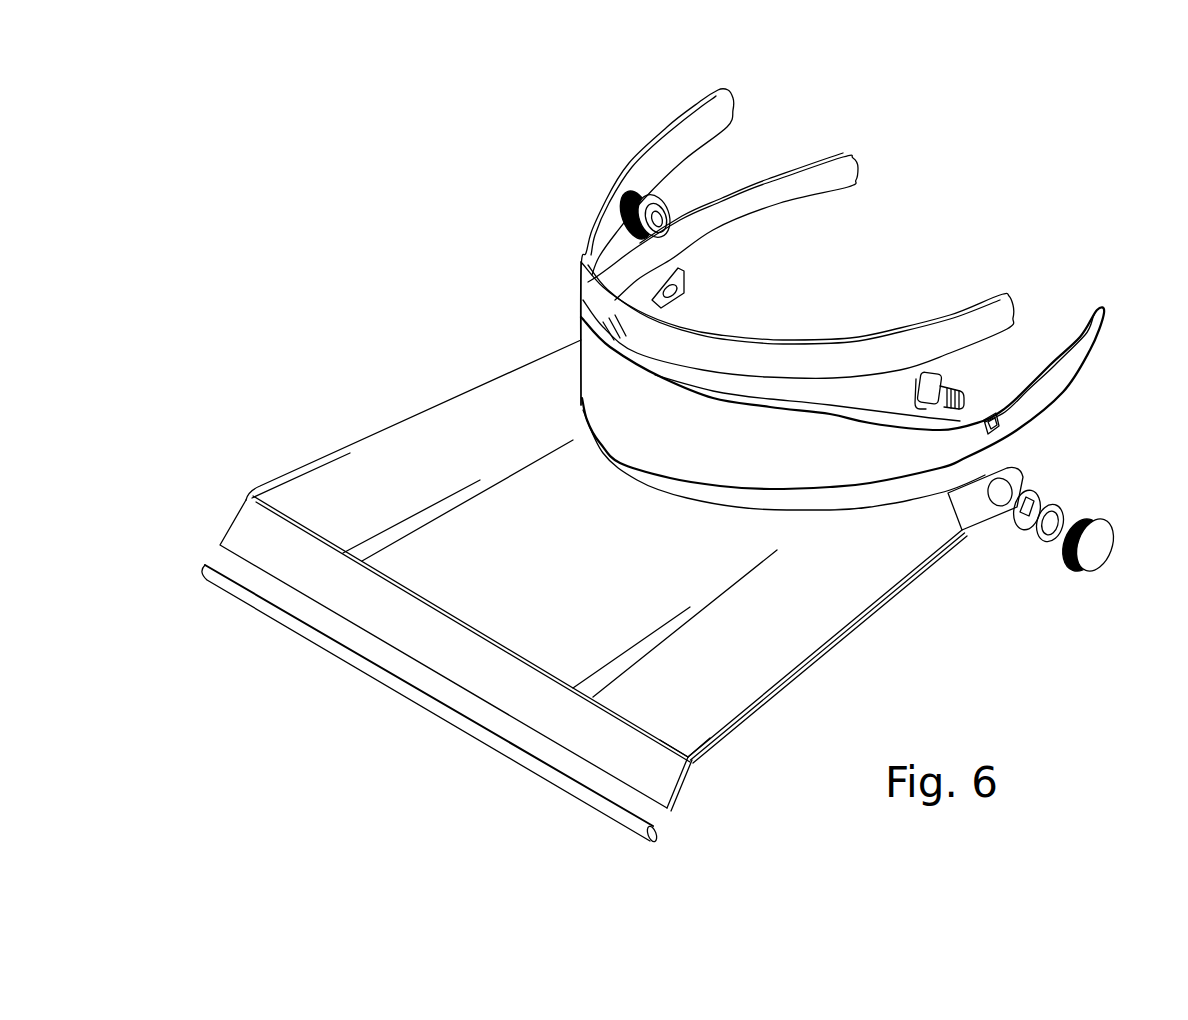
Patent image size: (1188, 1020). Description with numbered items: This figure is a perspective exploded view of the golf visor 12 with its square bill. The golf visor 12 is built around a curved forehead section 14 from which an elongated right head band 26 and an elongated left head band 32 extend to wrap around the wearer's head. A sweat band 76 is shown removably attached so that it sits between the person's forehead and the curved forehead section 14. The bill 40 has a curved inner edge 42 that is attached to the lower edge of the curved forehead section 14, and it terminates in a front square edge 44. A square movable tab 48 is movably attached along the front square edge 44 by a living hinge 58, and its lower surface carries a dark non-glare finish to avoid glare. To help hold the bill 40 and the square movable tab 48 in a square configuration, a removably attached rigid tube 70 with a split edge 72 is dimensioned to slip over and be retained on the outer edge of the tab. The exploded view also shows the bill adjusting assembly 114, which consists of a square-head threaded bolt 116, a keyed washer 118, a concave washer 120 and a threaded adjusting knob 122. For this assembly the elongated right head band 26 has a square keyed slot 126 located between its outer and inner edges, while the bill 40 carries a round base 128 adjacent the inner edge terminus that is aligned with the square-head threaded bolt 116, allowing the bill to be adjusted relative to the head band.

The golf visor 12 is at (842, 324).
The curved forehead section 14 is at (711, 434).
The elongated right head band 26 is at (789, 187).
The elongated left head band 32 is at (1086, 346).
The bill 40 is at (391, 452).
The curved inner edge 42 is at (582, 424).
The front square edge 44 is at (323, 548).
The square movable tab 48 is at (658, 764).
The living hinge 58 is at (625, 725).
The rigid tube 70 is at (622, 816).
The split edge 72 is at (653, 836).
The sweat band 76 is at (708, 124).
The bill adjusting assembly 114 is at (1060, 580).
The square-head threaded bolt 116 is at (937, 374).
The keyed washer 118 is at (1030, 503).
The concave washer 120 is at (1053, 523).
The threaded adjusting knob 122 is at (1111, 571).
The square keyed slot 126 is at (998, 420).
The round base 128 is at (998, 491).